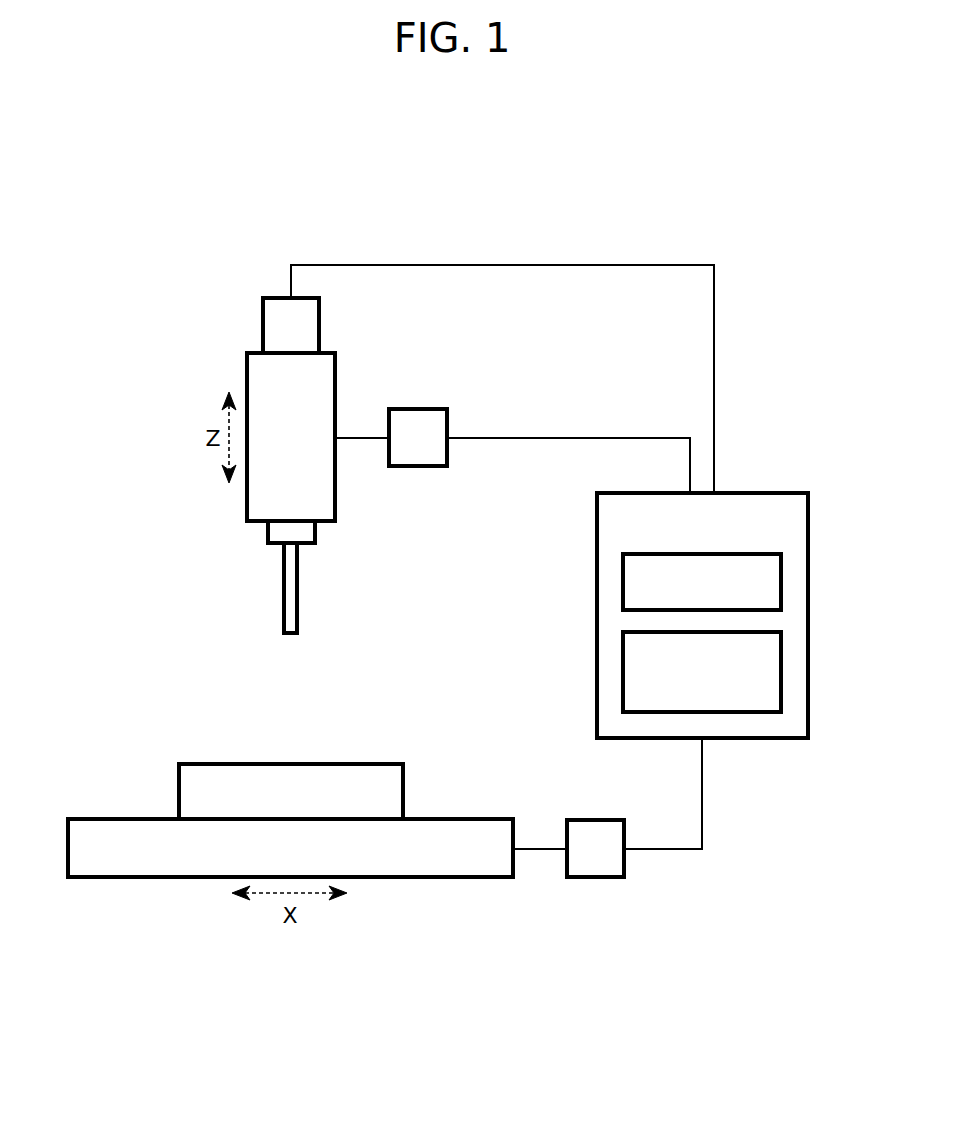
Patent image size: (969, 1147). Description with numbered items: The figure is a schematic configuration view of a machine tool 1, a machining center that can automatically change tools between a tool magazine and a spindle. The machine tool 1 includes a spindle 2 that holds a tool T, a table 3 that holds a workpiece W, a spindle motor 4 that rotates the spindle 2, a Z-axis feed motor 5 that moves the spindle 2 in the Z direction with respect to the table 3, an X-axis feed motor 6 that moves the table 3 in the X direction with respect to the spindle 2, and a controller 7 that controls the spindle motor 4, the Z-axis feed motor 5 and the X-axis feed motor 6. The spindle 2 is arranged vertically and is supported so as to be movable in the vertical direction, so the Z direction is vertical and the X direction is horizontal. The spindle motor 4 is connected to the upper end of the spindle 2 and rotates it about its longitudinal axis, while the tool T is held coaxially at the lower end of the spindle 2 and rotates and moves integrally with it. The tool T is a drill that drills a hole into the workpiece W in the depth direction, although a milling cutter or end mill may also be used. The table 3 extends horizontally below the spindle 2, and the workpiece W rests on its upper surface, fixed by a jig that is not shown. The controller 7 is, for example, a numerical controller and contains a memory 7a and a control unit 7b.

The machine tool 1 is at (112, 273).
The spindle 2 is at (247, 373).
The table 3 is at (120, 819).
The spindle motor 4 is at (263, 322).
The Z-axis feed motor 5 is at (413, 409).
The X-axis feed motor 6 is at (596, 877).
The controller 7 is at (751, 615).
The memory 7a is at (781, 577).
The control unit 7b is at (781, 652).
The tool T is at (284, 578).
The workpiece W is at (235, 764).